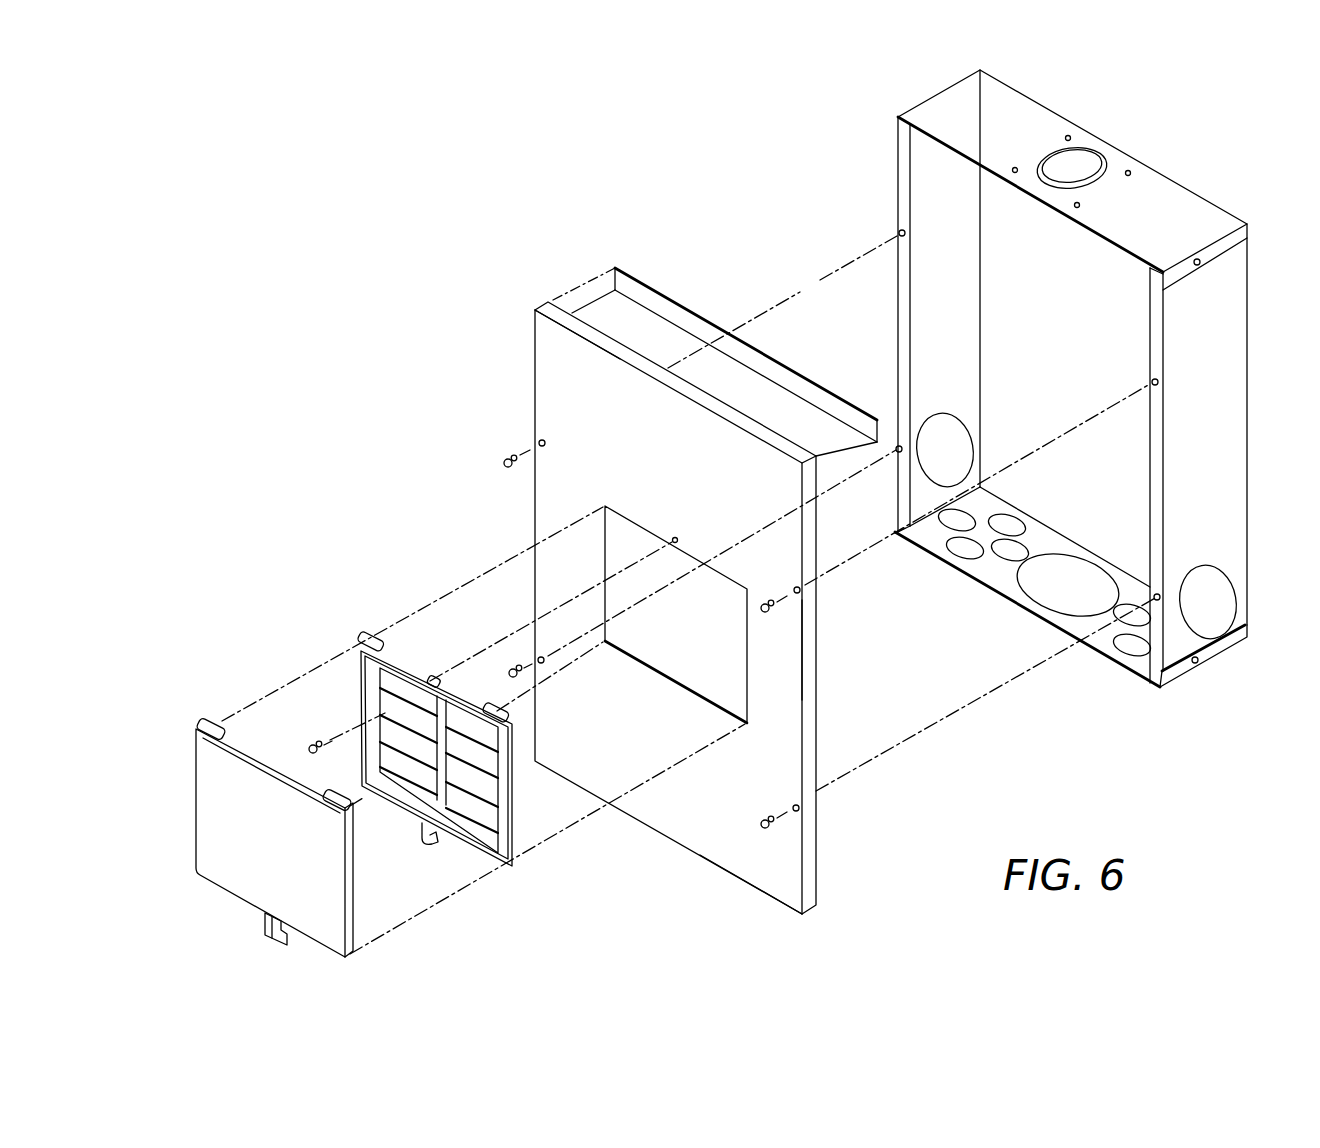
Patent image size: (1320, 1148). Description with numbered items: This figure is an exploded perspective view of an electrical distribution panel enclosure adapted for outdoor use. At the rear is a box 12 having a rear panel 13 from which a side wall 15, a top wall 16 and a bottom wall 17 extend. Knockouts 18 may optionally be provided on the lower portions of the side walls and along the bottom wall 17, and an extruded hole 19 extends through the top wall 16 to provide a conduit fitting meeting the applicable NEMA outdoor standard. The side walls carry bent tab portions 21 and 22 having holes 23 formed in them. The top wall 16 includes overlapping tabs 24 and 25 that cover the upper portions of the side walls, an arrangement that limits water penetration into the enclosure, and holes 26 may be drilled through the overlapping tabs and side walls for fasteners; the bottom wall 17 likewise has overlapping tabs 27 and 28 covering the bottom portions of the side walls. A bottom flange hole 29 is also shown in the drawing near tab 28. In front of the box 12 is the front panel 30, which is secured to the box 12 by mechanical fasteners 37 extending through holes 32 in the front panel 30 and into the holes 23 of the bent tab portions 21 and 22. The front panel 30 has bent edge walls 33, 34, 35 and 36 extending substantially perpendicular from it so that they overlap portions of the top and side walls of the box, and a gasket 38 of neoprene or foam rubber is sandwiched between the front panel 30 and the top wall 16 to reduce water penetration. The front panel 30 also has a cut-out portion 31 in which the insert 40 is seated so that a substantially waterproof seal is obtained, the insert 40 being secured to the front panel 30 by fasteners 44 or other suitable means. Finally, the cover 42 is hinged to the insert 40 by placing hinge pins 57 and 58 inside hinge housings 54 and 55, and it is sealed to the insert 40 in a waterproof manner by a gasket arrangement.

The box 12 is at (1165, 113).
The rear panel 13 is at (1057, 353).
The side wall 15 is at (1228, 342).
The top wall 16 is at (1030, 105).
The bottom wall 17 is at (998, 582).
The knockouts 18 is at (1226, 593).
The extruded hole 19 is at (1107, 170).
The bent tab portion 21 is at (900, 338).
The bent tab portion 22 is at (1156, 422).
The holes 23 is at (899, 233).
The overlapping tab 24 is at (897, 125).
The overlapping tab 25 is at (1233, 240).
The holes 26 is at (1198, 266).
The overlapping tab 27 is at (896, 528).
The overlapping tab 28 is at (1221, 648).
The bottom flange hole 29 is at (1196, 665).
The front panel 30 is at (543, 358).
The cut-out portion 31 is at (746, 650).
The holes 32 is at (799, 596).
The bent edge wall 33 is at (538, 307).
The bent edge wall 34 is at (811, 645).
The bent edge wall 35 is at (723, 410).
The bent edge wall 36 is at (805, 913).
The mechanical fasteners 37 is at (508, 453).
The gasket 38 is at (658, 300).
The insert 40 is at (483, 847).
The cover 42 is at (215, 816).
The mechanical fasteners 44 is at (322, 743).
The hinge housing 54 is at (365, 635).
The hinge housing 55 is at (492, 706).
The hinge pin 57 is at (207, 722).
The hinge pin 58 is at (327, 807).